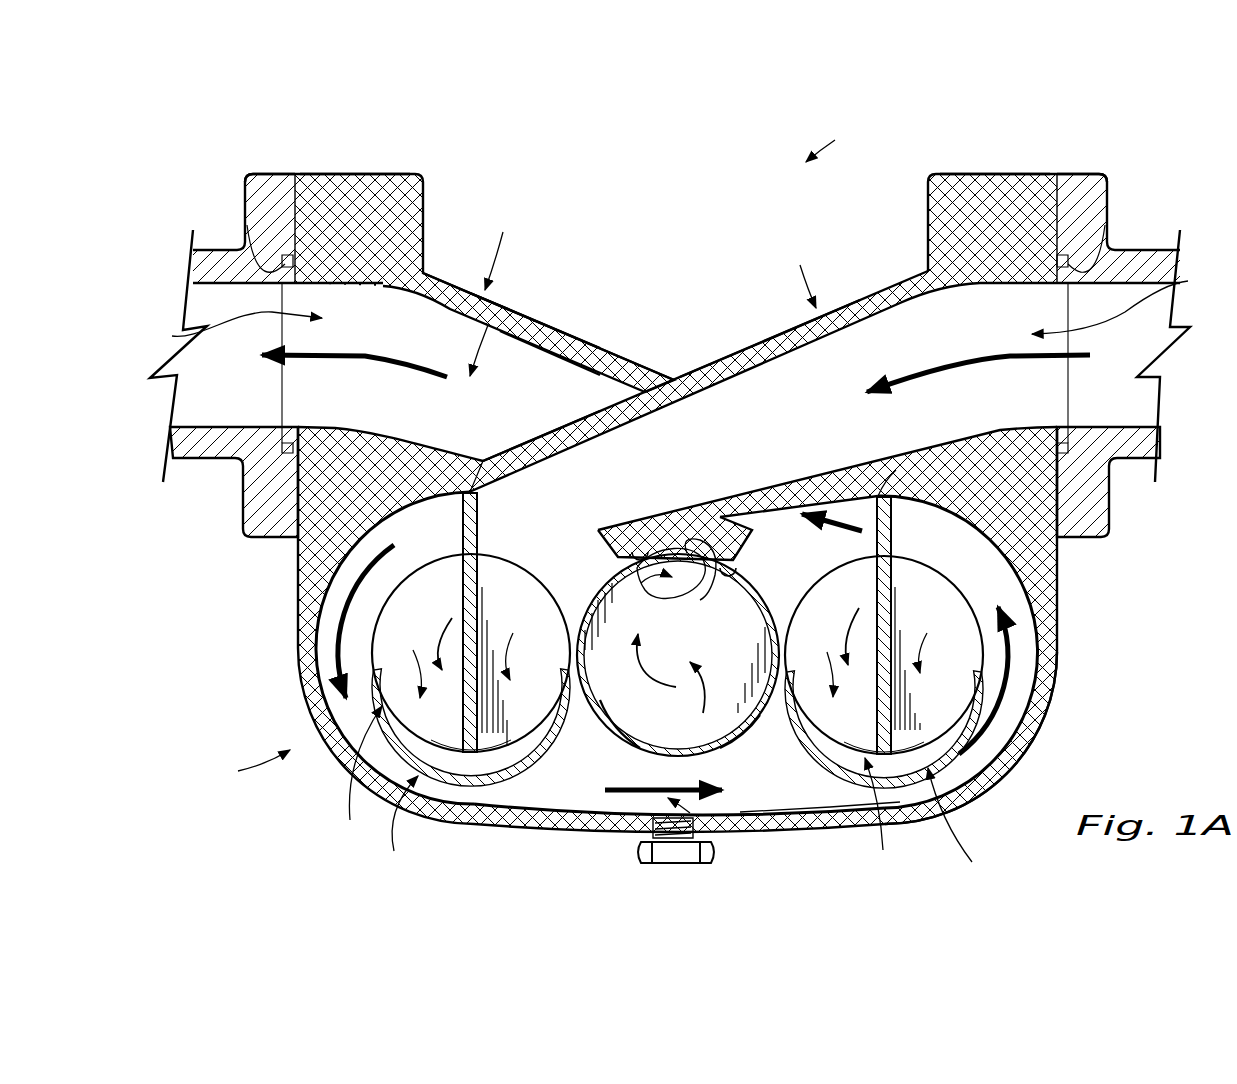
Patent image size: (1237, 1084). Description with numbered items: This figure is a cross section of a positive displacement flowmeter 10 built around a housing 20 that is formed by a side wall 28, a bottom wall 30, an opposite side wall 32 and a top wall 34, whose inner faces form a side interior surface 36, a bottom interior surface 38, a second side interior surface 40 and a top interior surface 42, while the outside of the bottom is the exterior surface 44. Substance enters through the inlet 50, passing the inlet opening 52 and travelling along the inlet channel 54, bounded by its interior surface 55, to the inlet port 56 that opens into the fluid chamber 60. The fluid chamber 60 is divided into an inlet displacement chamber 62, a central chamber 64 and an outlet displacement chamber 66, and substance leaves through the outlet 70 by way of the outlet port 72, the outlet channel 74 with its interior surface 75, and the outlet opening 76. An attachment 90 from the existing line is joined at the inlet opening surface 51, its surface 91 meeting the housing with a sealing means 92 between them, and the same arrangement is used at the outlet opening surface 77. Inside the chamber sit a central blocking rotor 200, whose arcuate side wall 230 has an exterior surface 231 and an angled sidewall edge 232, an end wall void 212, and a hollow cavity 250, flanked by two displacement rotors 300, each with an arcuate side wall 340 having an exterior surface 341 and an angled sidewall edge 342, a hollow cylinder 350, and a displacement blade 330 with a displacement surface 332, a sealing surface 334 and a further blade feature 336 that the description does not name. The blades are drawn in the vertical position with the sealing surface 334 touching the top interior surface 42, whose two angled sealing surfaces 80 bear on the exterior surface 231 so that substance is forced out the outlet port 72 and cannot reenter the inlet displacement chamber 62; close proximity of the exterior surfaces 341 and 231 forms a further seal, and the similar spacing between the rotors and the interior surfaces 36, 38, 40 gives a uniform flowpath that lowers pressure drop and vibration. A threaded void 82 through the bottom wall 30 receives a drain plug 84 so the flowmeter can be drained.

The flowmeter 10 is at (837, 138).
The housing 20 is at (366, 196).
The side wall 28 is at (306, 592).
The bottom wall 30 is at (548, 838).
The side wall 32 is at (1044, 610).
The top wall 34 is at (702, 513).
The side interior surface 36 is at (316, 628).
The bottom interior surface 38 is at (785, 832).
The side interior surface 40 is at (1048, 708).
The top interior surface 42 is at (662, 516).
The exterior surface 44 is at (830, 832).
The inlet 50 is at (823, 365).
The inlet opening surface 51 is at (1036, 174).
The inlet opening 52 is at (1128, 383).
The inlet channel 54 is at (783, 400).
The interior surface 55 is at (708, 378).
The inlet port 56 is at (562, 498).
The fluid chamber 60 is at (244, 768).
The inlet displacement chamber 62 is at (396, 826).
The central chamber 64 is at (731, 834).
The outlet displacement chamber 66 is at (964, 823).
The outlet 70 is at (528, 300).
The outlet port 72 is at (838, 500).
The outlet channel 74 is at (533, 319).
The interior surface 75 is at (585, 368).
The outlet opening 76 is at (604, 383).
The outlet opening surface 77 is at (310, 173).
The sealing surfaces 80 is at (636, 545).
The void 82 is at (645, 828).
The drain plug 84 is at (676, 858).
The attachment 90 is at (243, 205).
The surface 91 is at (290, 176).
The sealing means 92 is at (247, 225).
The blocking rotor 200 is at (758, 745).
The end wall void 212 is at (652, 589).
The arcuate side wall 230 is at (603, 727).
The exterior surface 231 is at (745, 736).
The angled sidewall edge 232 is at (694, 572).
The hollow cavity 250 is at (678, 685).
The displacement rotor 300 is at (603, 790).
The displacement blade 330 is at (478, 522).
The displacement surface 332 is at (460, 534).
The sealing surface 334 is at (483, 462).
The baffle face 336 is at (482, 536).
The arcuate side wall 340 is at (518, 744).
The exterior surface 341 is at (480, 754).
The angled sidewall edge 342 is at (372, 630).
The hollow cylinder 350 is at (671, 664).